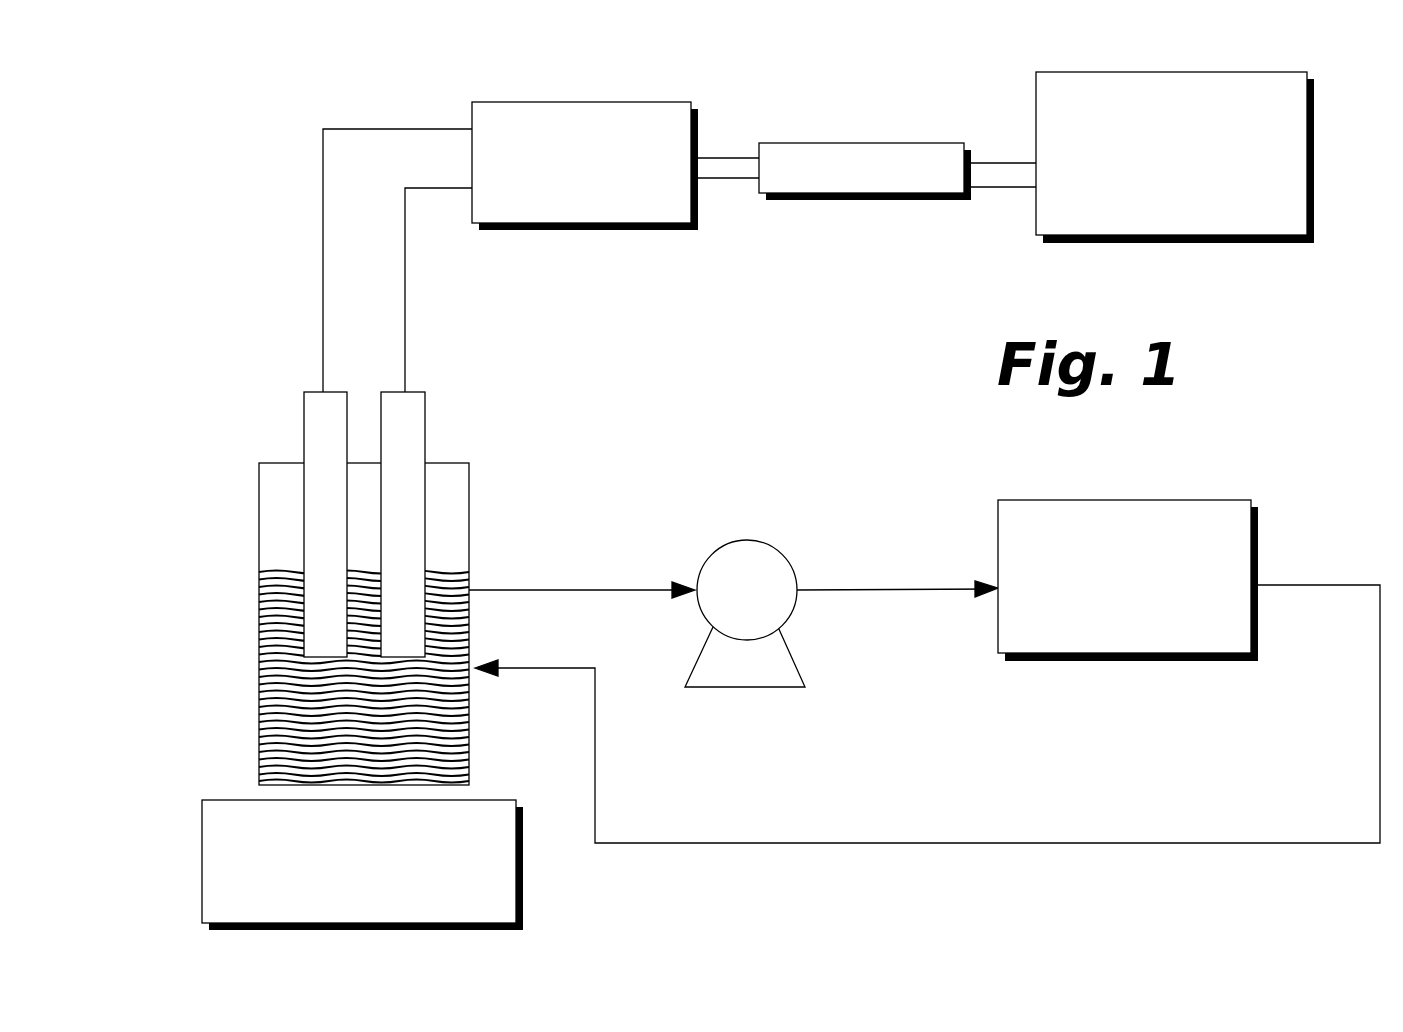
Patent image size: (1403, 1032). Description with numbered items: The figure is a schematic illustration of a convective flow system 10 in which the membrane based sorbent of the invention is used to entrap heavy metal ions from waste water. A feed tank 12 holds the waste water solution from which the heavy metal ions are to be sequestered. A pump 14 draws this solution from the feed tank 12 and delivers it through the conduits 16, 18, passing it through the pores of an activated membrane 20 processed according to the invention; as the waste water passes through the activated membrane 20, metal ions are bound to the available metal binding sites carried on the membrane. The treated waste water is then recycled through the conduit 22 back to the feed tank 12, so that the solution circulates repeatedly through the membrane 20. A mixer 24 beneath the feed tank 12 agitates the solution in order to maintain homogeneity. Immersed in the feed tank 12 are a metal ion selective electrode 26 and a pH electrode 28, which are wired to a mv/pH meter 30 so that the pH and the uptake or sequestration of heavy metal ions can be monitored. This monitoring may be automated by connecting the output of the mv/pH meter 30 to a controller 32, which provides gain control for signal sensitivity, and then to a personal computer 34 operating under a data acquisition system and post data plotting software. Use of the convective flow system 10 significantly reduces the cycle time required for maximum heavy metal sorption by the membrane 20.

The convective flow system 10 is at (272, 215).
The feed tank 12 is at (470, 502).
The pump 14 is at (757, 541).
The conduit 16 is at (583, 588).
The conduit 18 is at (863, 592).
The activated membrane 20 is at (1237, 540).
The conduit 22 is at (1172, 842).
The mixer 24 is at (502, 888).
The metal ion selective electrode 26 is at (328, 437).
The pH electrode 28 is at (398, 435).
The mv/pH meter 30 is at (660, 117).
The controller 32 is at (845, 150).
The personal computer 34 is at (1050, 198).